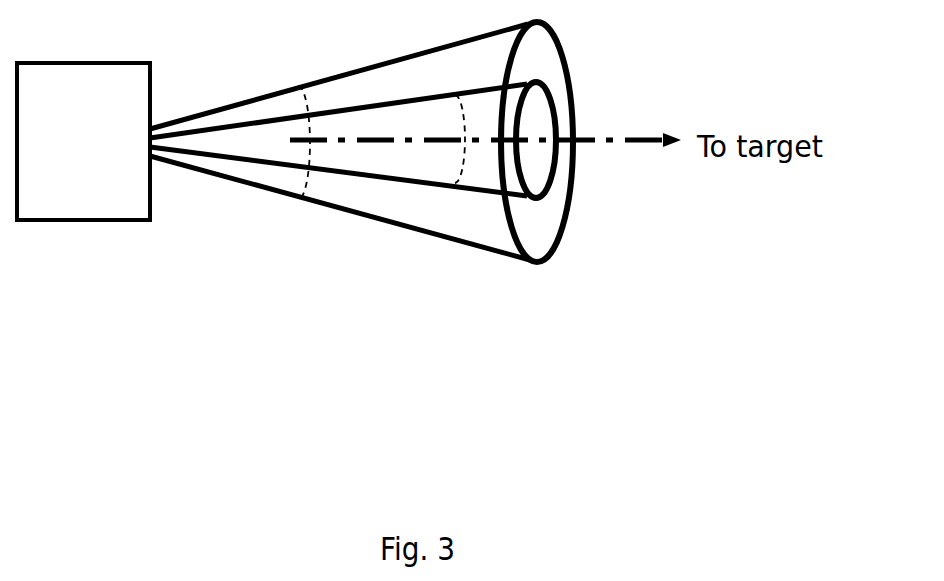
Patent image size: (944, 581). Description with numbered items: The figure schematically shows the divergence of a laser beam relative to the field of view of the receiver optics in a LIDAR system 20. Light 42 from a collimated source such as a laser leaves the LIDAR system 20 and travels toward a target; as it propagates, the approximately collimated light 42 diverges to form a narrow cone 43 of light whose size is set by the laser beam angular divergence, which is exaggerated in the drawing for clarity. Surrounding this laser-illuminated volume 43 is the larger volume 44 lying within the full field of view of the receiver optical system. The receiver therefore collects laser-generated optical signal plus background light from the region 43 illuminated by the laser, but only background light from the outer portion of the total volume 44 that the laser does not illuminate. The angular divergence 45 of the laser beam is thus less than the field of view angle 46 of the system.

The LIDAR system 20 is at (83, 141).
The light 42 is at (540, 125).
The narrow cone of light 43 is at (390, 180).
The volume within the full field of view 44 is at (433, 237).
The angular divergence of the laser beam 45 is at (465, 157).
The field of view angle 46 is at (315, 157).